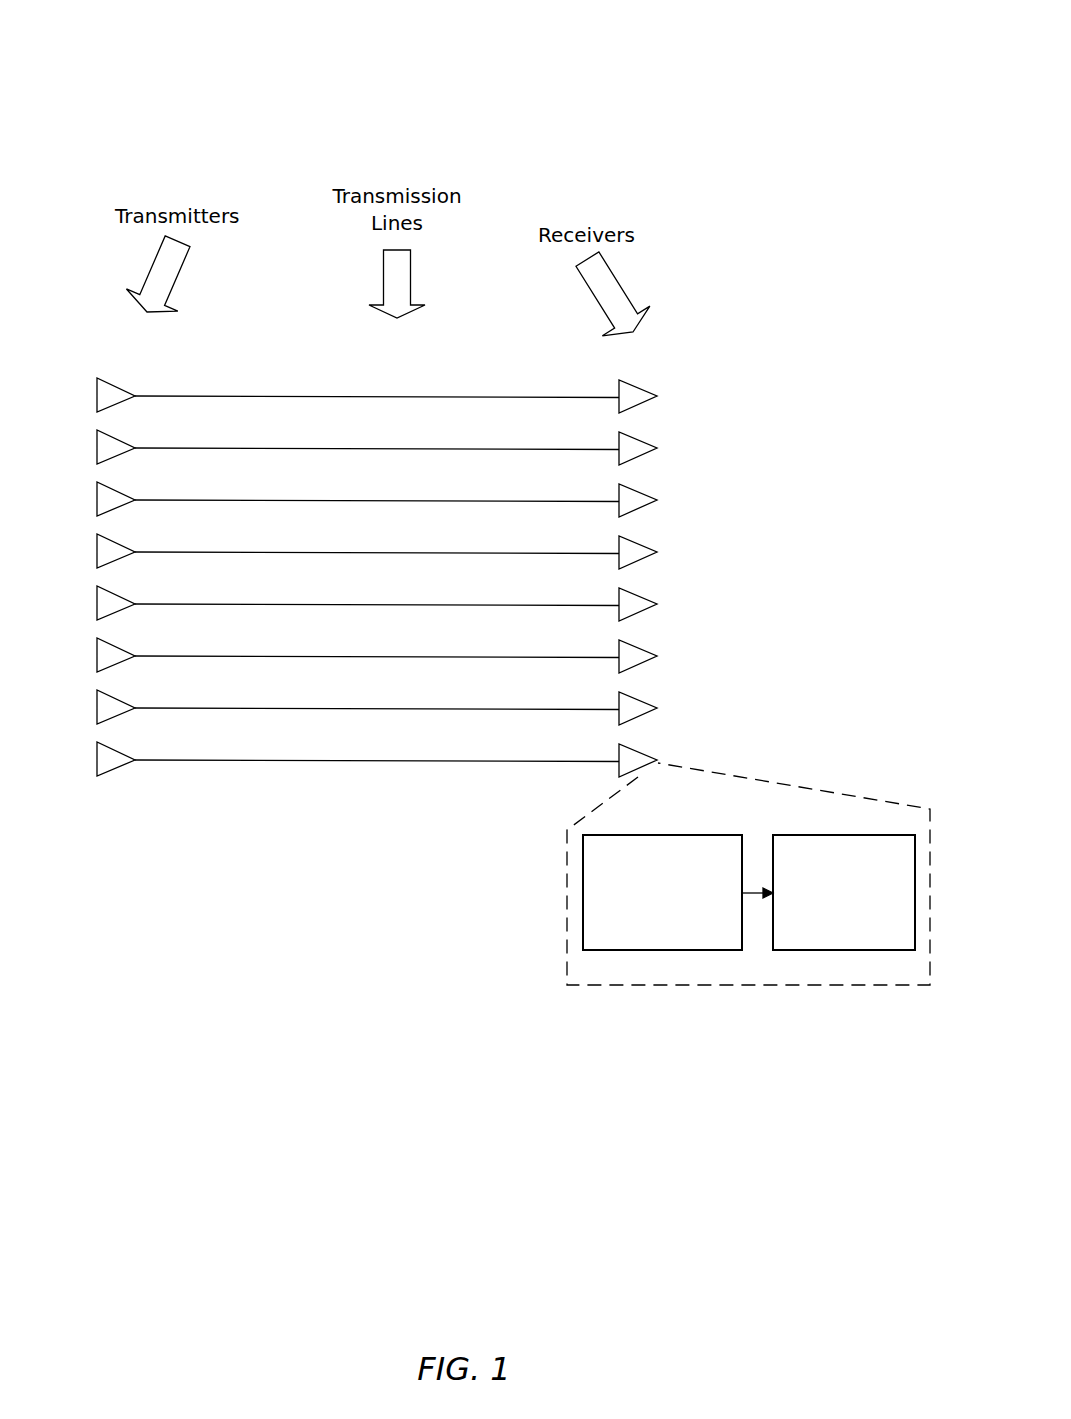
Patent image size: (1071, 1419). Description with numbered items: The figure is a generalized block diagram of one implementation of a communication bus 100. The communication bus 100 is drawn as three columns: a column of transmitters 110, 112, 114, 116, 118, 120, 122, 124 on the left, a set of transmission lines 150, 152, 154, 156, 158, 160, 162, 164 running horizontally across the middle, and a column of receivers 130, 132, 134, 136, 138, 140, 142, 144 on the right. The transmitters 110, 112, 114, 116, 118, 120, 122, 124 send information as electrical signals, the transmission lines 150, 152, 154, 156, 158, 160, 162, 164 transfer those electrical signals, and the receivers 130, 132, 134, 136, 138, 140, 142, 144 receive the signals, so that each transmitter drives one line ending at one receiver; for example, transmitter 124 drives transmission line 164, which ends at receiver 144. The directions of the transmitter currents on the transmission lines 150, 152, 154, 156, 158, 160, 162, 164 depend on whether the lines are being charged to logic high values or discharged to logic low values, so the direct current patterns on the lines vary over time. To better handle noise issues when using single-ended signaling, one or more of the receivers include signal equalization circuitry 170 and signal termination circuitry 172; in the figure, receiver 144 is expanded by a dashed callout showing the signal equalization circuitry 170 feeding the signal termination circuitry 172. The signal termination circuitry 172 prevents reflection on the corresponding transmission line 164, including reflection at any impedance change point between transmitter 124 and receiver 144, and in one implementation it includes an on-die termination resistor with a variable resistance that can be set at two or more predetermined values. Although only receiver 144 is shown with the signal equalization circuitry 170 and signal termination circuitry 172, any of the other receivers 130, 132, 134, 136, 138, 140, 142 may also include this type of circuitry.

The communication bus 100 is at (798, 87).
The transmitter 110 is at (118, 388).
The transmitter 112 is at (118, 440).
The transmitter 114 is at (118, 492).
The transmitter 116 is at (118, 544).
The transmitter 118 is at (118, 596).
The transmitter 120 is at (118, 648).
The transmitter 122 is at (118, 700).
The transmitter 124 is at (118, 752).
The receiver 130 is at (637, 386).
The receiver 132 is at (637, 438).
The receiver 134 is at (637, 490).
The receiver 136 is at (637, 542).
The receiver 138 is at (637, 594).
The receiver 140 is at (637, 646).
The receiver 142 is at (637, 698).
The receiver 144 is at (637, 750).
The transmission line 150 is at (231, 396).
The transmission line 152 is at (231, 448).
The transmission line 154 is at (231, 500).
The transmission line 156 is at (231, 552).
The transmission line 158 is at (231, 604).
The transmission line 160 is at (231, 656).
The transmission line 162 is at (231, 708).
The transmission line 164 is at (231, 760).
The signal equalization circuitry 170 is at (662, 892).
The signal termination circuitry 172 is at (844, 892).